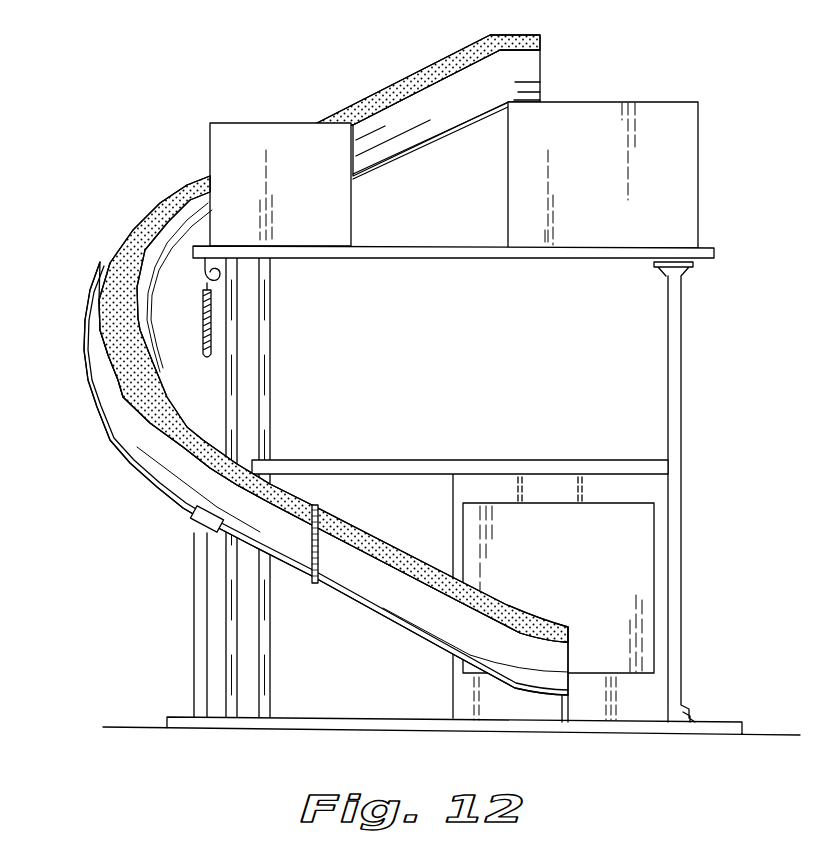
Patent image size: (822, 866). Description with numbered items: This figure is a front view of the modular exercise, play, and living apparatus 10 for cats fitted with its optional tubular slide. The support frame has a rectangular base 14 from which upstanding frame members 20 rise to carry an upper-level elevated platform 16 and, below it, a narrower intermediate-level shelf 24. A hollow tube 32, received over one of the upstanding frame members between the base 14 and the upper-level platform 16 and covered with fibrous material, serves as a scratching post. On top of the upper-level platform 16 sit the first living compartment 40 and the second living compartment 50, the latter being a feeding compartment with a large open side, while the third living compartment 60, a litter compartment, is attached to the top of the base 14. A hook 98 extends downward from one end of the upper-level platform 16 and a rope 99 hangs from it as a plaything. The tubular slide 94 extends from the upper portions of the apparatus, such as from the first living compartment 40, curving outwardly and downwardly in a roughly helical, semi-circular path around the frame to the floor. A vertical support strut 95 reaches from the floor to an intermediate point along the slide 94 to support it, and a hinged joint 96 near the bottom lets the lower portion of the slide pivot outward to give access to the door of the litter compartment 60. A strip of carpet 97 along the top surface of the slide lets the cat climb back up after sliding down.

The modular exercise, play, and living apparatus 10 is at (414, 408).
The base 14 is at (210, 721).
The upper-level elevated platform 16 is at (446, 257).
The upstanding frame member 20 is at (681, 428).
The intermediate-level platform or shelf 24 is at (378, 460).
The hollow tube 32 is at (248, 670).
The first living compartment 40 is at (699, 123).
The second living compartment 50 is at (220, 157).
The third living compartment 60 is at (653, 700).
The tubular slide 94 is at (448, 85).
The vertical support strut 95 is at (200, 573).
The hinged joint 96 is at (317, 553).
The strip of carpet 97 is at (125, 240).
The hook 98 is at (213, 265).
The rope 99 is at (202, 308).